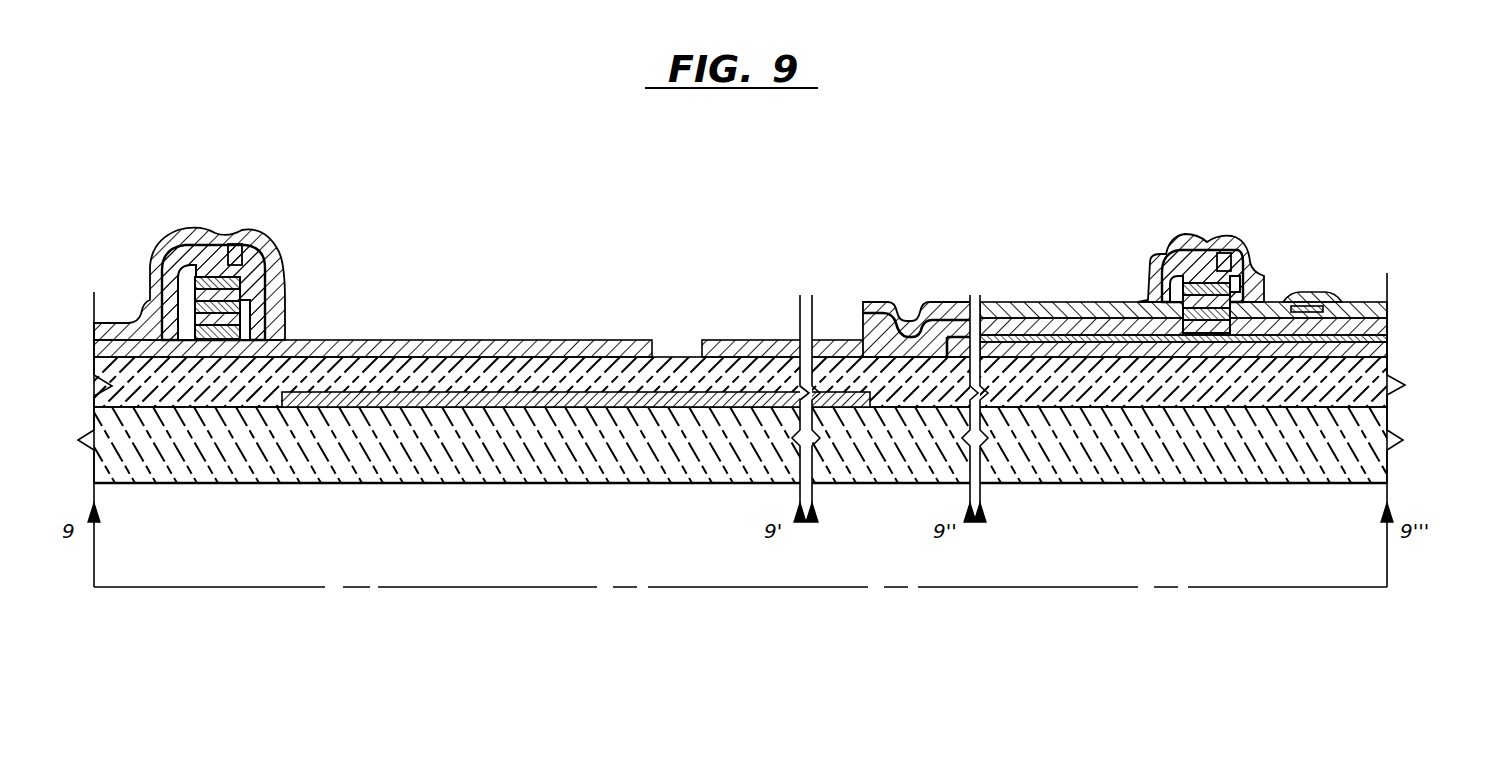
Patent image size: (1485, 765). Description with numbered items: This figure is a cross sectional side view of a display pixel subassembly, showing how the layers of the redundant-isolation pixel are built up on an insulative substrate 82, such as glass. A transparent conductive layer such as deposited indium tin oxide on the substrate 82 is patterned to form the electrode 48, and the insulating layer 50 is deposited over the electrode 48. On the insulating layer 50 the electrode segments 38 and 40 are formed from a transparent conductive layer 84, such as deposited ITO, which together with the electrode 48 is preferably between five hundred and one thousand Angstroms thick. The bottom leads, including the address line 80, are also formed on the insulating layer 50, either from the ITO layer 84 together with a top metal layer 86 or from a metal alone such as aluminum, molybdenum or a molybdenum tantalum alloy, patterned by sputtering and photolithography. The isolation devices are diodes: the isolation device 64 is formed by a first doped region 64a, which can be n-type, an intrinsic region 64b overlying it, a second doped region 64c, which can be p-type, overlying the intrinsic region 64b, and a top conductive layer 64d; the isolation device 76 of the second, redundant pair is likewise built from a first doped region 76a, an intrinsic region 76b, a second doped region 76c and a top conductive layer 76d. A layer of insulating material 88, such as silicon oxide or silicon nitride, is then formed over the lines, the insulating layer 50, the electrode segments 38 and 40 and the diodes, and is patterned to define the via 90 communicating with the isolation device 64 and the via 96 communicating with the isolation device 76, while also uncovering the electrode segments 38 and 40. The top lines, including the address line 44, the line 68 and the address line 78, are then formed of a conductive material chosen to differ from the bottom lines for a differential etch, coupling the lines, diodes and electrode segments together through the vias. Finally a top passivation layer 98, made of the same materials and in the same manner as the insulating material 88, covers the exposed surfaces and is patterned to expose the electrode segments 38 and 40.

The electrode segment 38 is at (600, 340).
The electrode segment 40 is at (742, 340).
The address line 44 is at (1269, 247).
The electrode 48 is at (490, 400).
The insulating layer 50 is at (1372, 406).
The isolation device 64 is at (292, 256).
The first doped region 64a is at (275, 312).
The intrinsic region 64b is at (270, 303).
The second doped region 64c is at (270, 292).
The top conductive layer 64d is at (262, 280).
The line 68 is at (262, 248).
The isolation device 76 is at (1277, 232).
The first doped region 76a is at (1238, 320).
The intrinsic region 76b is at (1238, 308).
The second doped region 76c is at (1236, 296).
The top conductive layer 76d is at (1236, 280).
The address line 78 is at (1372, 294).
The address line 80 is at (1372, 352).
The insulative substrate 82 is at (1130, 460).
The transparent conductive layer 84 is at (998, 352).
The top metal layer 86 is at (1038, 336).
The insulating material 88 is at (1387, 336).
The via 90 is at (216, 262).
The via 96 is at (1222, 270).
The top passivation layer 98 is at (1114, 300).